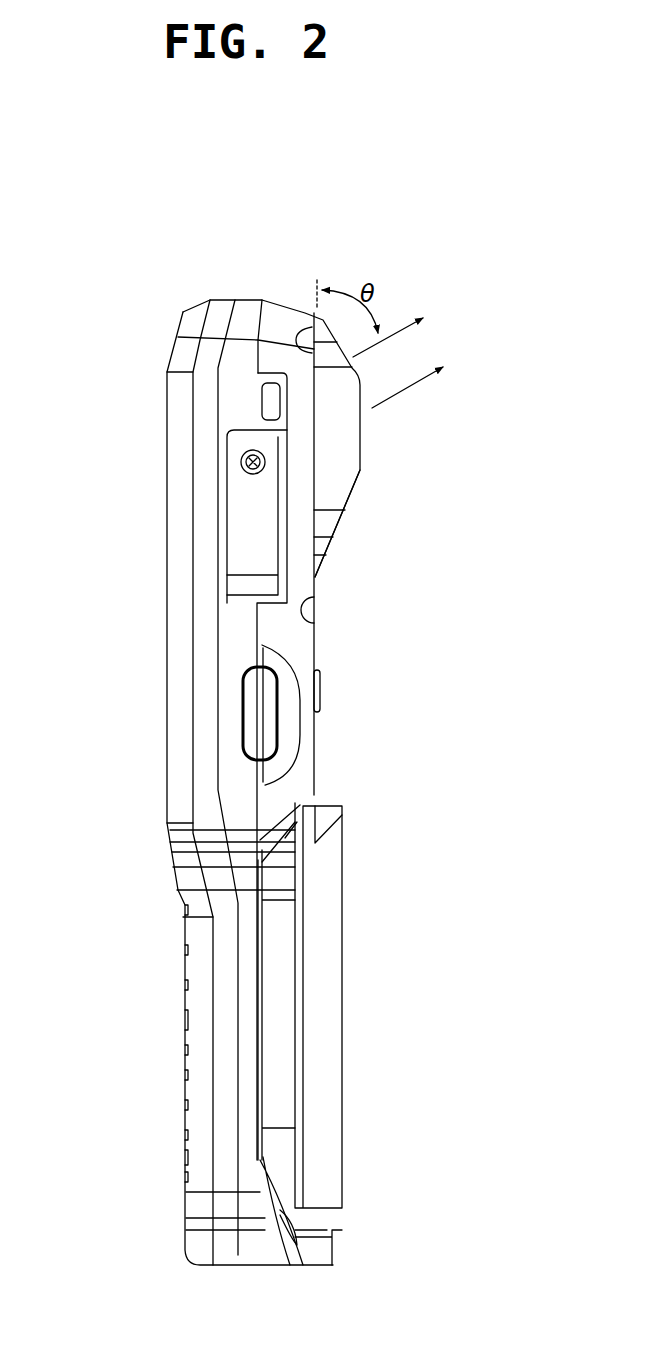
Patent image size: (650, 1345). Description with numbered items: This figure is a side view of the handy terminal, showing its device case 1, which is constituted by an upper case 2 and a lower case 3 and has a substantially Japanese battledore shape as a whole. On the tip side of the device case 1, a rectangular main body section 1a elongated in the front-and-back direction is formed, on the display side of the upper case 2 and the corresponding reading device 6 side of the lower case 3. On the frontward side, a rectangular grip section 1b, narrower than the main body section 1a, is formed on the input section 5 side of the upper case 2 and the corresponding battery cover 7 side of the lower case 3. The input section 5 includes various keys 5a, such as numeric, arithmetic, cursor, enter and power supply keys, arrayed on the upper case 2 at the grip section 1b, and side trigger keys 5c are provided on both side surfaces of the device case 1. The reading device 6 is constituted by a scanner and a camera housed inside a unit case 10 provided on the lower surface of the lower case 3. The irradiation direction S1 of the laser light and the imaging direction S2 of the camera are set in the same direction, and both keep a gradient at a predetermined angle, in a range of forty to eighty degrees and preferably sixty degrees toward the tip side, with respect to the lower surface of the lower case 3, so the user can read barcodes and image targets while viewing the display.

The device case 1 is at (210, 732).
The main body section 1a is at (233, 408).
The grip section 1b is at (283, 970).
The upper case 2 is at (183, 637).
The lower case 3 is at (292, 631).
The input section 5 is at (120, 1043).
The keys 5a is at (183, 1030).
The side trigger keys 5c is at (262, 713).
The reading device 6 is at (365, 438).
The battery cover 7 is at (325, 1070).
The unit case 10 is at (337, 462).
The irradiation direction S1 is at (403, 393).
The imaging direction S2 is at (395, 335).